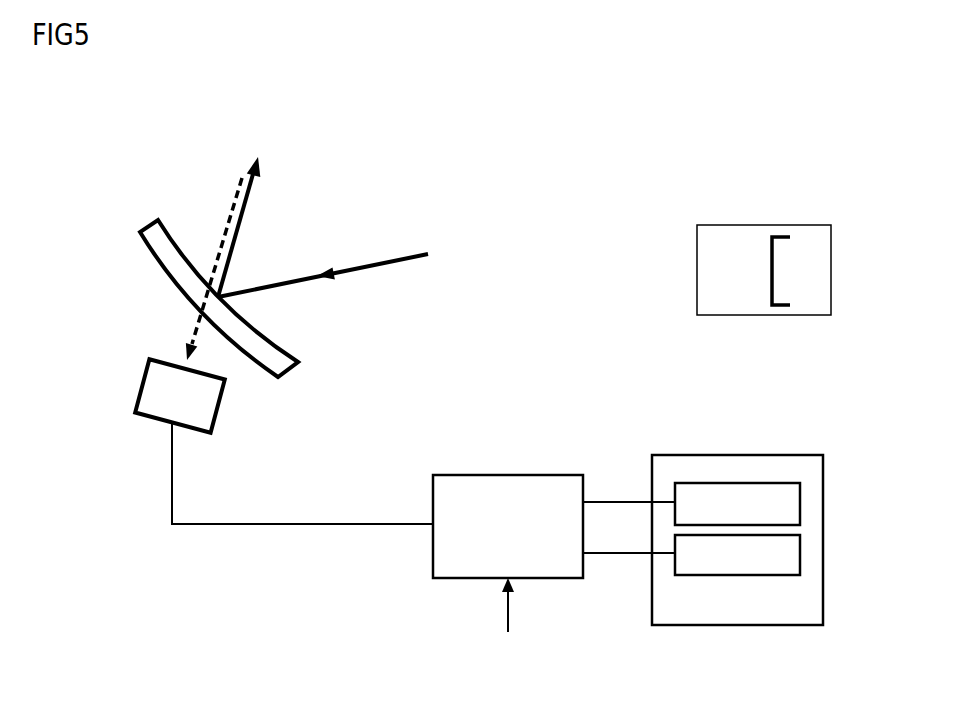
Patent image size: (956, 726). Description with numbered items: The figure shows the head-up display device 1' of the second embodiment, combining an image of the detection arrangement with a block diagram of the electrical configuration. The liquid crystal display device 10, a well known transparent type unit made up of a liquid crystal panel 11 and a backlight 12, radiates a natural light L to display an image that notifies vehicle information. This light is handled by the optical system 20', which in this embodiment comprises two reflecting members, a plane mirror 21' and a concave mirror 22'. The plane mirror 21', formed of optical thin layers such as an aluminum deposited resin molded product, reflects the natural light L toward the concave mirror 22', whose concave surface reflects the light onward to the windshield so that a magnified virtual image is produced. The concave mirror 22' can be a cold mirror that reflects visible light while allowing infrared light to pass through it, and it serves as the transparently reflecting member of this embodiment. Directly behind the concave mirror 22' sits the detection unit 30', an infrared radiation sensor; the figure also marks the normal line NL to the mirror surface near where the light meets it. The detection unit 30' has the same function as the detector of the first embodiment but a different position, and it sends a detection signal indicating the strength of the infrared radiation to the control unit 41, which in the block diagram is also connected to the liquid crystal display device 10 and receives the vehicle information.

The head-up display device 1' is at (697, 111).
The liquid crystal display device 10 is at (687, 625).
The liquid crystal panel 11 is at (800, 511).
The backlight 12 is at (800, 565).
The optical system 20' is at (764, 270).
The plane mirror 21' is at (800, 256).
The concave mirror 22' is at (478, 319).
The detection unit 30' is at (247, 439).
The control unit 41 is at (508, 475).
The natural light L is at (365, 268).
The normal line NL is at (232, 213).